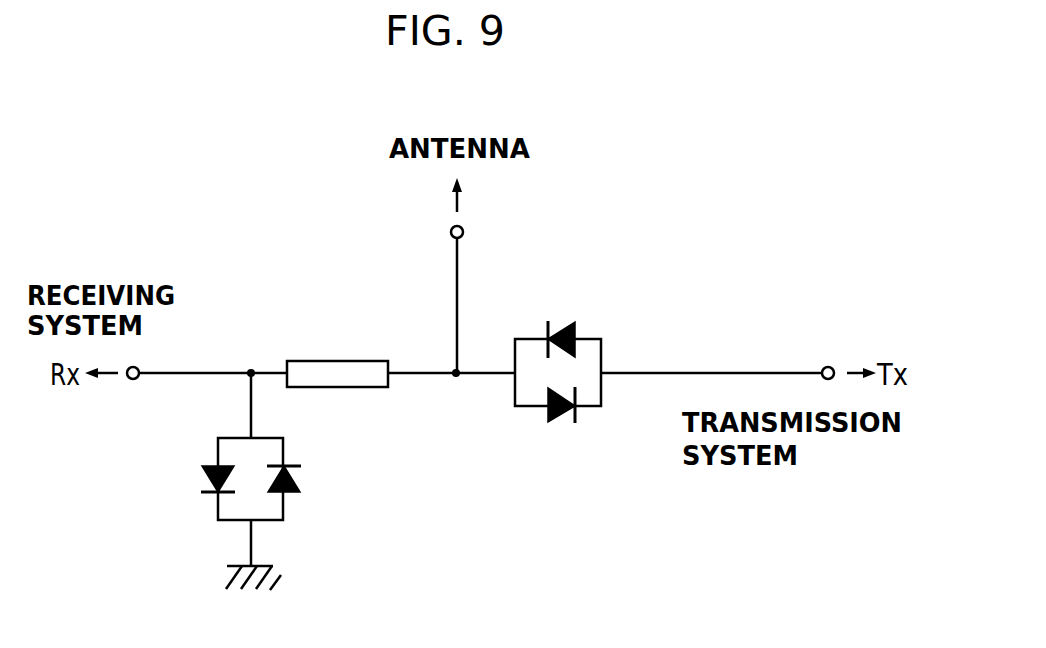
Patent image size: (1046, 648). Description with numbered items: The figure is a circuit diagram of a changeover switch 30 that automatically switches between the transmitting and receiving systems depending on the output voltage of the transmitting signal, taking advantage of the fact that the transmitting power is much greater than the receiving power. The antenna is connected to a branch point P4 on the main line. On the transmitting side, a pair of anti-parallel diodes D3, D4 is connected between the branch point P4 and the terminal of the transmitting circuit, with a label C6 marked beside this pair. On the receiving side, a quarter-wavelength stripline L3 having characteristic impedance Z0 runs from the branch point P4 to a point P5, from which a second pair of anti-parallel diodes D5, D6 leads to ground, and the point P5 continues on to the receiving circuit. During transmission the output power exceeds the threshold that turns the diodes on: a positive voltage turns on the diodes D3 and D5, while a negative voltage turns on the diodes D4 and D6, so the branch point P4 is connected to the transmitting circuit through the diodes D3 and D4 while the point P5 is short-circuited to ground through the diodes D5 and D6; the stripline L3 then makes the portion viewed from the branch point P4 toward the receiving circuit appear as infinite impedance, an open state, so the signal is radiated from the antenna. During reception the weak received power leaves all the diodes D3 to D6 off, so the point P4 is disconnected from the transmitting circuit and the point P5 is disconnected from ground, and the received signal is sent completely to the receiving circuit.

The changeover switch 30 is at (225, 213).
The point P5 is at (250, 344).
The branch point P4 is at (456, 396).
The quarter-wavelength stripline L3 is at (357, 360).
The capacitor / parallel diode block C6 is at (557, 330).
The diode D3 is at (558, 322).
The diode D4 is at (557, 424).
The diode D5 is at (200, 480).
The diode D6 is at (302, 475).